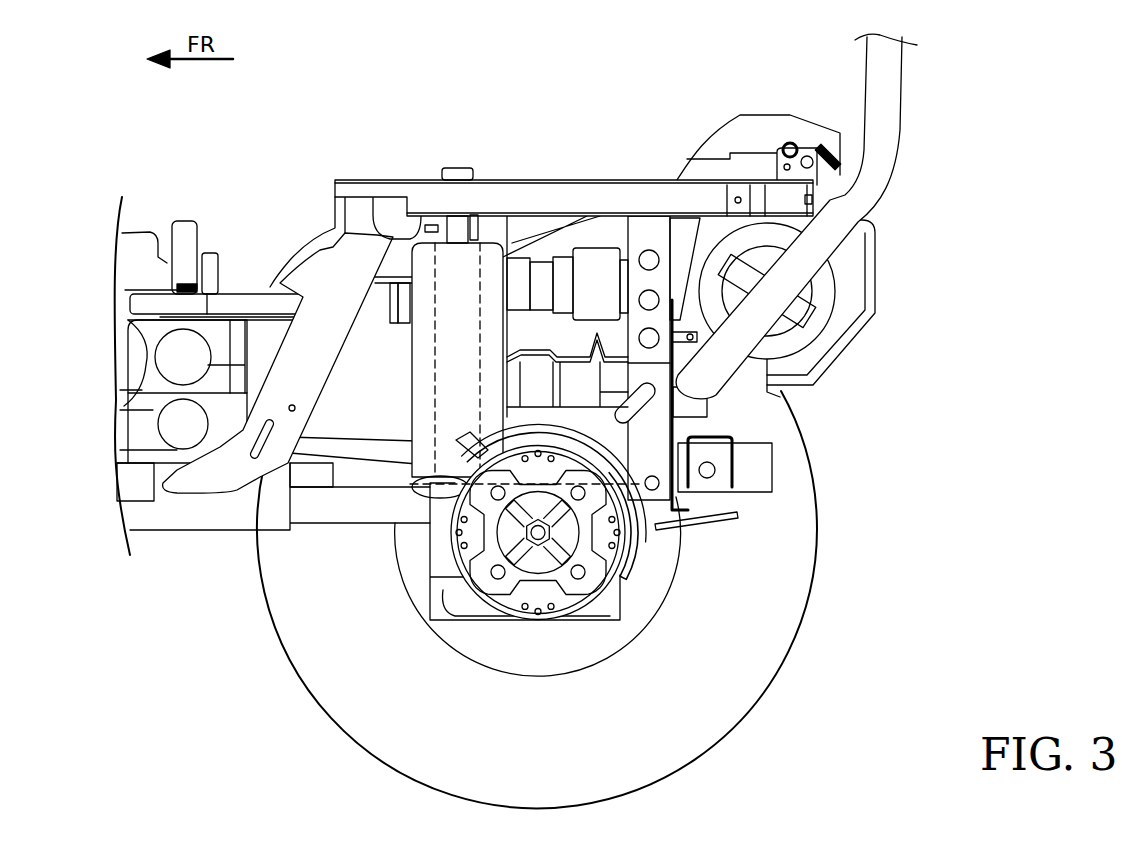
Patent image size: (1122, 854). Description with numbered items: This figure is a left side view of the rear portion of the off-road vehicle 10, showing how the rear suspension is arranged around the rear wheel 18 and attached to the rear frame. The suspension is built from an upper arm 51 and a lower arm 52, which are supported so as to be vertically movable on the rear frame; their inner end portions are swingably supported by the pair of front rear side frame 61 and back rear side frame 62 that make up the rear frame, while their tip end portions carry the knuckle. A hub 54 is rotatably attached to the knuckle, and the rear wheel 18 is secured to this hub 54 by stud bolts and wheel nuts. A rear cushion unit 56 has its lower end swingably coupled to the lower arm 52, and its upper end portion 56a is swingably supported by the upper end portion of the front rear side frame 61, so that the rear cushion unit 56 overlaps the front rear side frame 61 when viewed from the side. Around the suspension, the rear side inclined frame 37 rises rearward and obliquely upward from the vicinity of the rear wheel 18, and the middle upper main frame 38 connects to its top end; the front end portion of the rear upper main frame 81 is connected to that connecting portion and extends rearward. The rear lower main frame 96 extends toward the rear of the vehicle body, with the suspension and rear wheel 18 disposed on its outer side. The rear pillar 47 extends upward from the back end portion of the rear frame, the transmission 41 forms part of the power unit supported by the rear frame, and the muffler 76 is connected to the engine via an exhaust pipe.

The off-road vehicle 10 is at (278, 174).
The rear wheel 18 is at (732, 713).
The rear side inclined frame 37 is at (200, 480).
The middle upper main frame 38 is at (233, 297).
The transmission 41 is at (123, 378).
The rear pillar 47 is at (890, 87).
The upper arm 51 is at (665, 418).
The lower arm 52 is at (722, 505).
The hub 54 is at (570, 595).
The rear cushion unit 56 is at (420, 413).
The upper end portion 56a is at (458, 225).
The front rear side frame 61 is at (480, 277).
The back rear side frame 62 is at (645, 228).
The muffler 76 is at (808, 280).
The rear upper main frame 81 is at (575, 197).
The rear lower main frame 96 is at (742, 513).